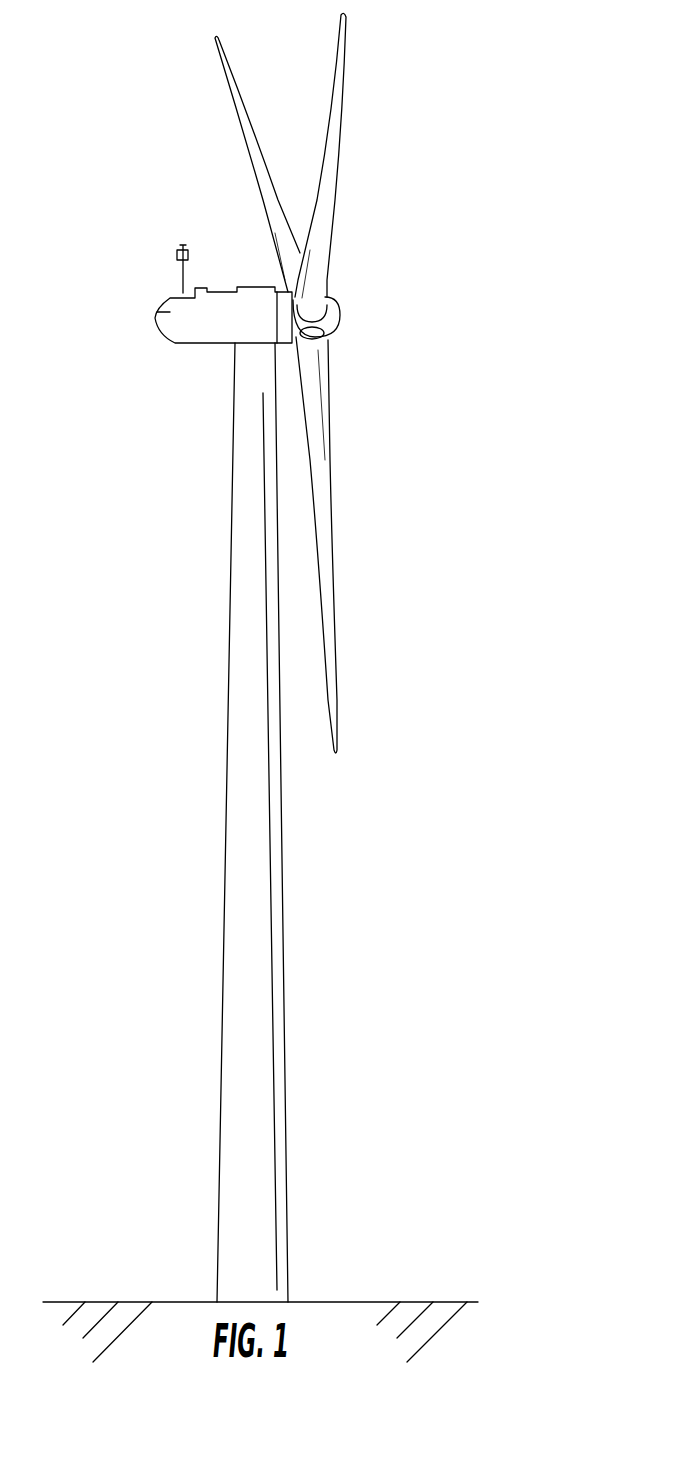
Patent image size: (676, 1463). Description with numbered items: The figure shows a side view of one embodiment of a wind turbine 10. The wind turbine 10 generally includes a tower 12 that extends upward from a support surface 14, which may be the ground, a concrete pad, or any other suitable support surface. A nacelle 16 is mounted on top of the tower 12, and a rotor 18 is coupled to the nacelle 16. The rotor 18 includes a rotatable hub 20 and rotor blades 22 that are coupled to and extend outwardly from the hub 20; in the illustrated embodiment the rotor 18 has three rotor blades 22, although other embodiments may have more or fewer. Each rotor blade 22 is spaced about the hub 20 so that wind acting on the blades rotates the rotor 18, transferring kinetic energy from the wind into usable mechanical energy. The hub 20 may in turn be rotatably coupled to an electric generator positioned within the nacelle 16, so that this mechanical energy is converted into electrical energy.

The wind turbine 10 is at (477, 147).
The tower 12 is at (278, 960).
The support surface 14 is at (131, 1302).
The nacelle 16 is at (190, 328).
The rotor 18 is at (347, 290).
The rotatable hub 20 is at (340, 322).
The rotor blade 22 is at (330, 137).